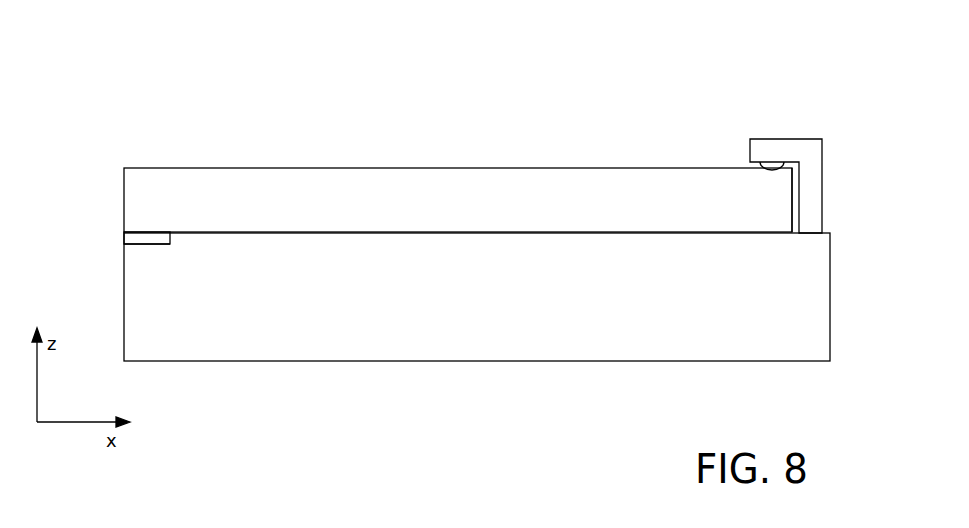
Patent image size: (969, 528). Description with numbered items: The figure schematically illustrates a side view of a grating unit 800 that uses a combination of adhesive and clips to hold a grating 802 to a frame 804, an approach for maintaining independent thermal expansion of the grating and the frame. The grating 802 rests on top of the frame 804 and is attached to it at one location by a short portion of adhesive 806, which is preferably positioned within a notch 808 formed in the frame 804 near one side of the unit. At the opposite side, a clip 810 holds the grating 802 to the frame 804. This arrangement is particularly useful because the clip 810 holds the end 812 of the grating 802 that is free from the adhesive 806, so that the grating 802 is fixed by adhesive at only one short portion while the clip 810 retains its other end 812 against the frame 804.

The grating unit 800 is at (136, 99).
The grating 802 is at (312, 169).
The frame 804 is at (433, 361).
The adhesive 806 is at (123, 240).
The notch 808 is at (138, 244).
The clip 810 is at (770, 140).
The end 812 is at (733, 169).